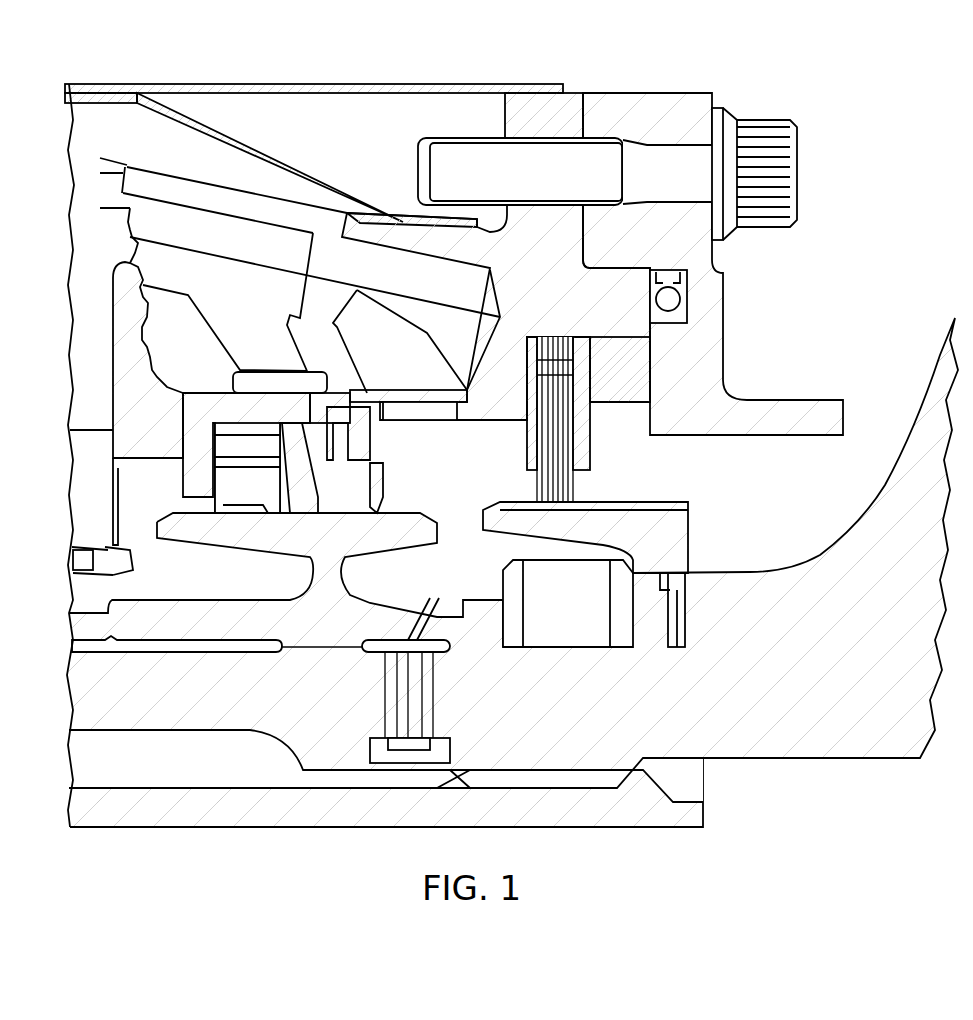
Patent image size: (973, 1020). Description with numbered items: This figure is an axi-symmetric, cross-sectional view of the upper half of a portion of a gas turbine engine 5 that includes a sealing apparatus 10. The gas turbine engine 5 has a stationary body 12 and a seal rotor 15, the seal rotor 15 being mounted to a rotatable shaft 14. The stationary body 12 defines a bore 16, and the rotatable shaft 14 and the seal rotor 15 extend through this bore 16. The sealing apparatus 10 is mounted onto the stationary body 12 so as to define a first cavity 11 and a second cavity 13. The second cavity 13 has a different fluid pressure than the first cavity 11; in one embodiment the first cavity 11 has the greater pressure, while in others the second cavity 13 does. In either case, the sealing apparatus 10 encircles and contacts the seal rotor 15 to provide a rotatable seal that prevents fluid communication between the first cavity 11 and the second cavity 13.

The gas turbine engine 5 is at (864, 99).
The sealing apparatus 10 is at (624, 443).
The first cavity 11 is at (797, 508).
The stationary body 12 is at (624, 278).
The second cavity 13 is at (428, 467).
The rotatable shaft 14 is at (284, 710).
The seal rotor 15 is at (483, 513).
The bore 16 is at (600, 335).